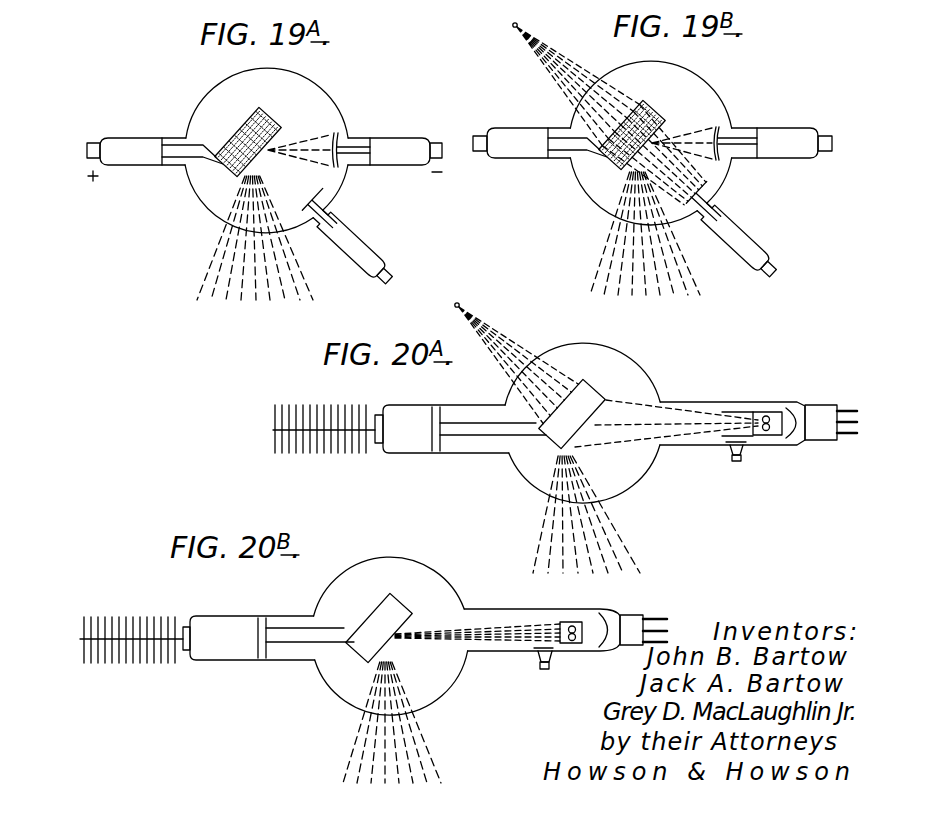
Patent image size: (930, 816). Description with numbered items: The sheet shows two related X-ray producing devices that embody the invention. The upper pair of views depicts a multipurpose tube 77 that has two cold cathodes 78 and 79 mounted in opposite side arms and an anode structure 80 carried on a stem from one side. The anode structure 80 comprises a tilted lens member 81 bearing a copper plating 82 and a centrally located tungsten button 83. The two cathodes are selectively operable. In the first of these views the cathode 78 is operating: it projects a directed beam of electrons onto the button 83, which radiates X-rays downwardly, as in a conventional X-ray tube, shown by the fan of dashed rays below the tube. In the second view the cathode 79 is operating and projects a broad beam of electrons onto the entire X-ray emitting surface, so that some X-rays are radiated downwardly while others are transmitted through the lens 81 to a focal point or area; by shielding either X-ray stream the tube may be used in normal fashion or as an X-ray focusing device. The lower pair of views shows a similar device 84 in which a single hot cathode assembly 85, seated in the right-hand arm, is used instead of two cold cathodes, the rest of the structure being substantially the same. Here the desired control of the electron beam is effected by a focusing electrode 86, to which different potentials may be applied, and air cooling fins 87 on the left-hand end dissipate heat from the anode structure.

In FIG. 19A, the tube 77 is at (217, 97).
In FIG. 19B, the tube 77 is at (748, 76).
In FIG. 19A, the cold cathode 78 is at (338, 132).
In FIG. 19B, the cold cathode 78 is at (722, 127).
In FIG. 19A, the cold cathode 79 is at (330, 200).
In FIG. 19B, the cold cathode 79 is at (712, 195).
In FIG. 19A, the anode structure 80 is at (207, 161).
In FIG. 19B, the anode structure 80 is at (588, 160).
In FIG. 19A, the lens member 81 is at (266, 113).
In FIG. 19B, the lens member 81 is at (652, 107).
In FIG. 20A, the lens member 81 is at (587, 379).
In FIG. 20B, the lens member 81 is at (389, 592).
In FIG. 19A, the copper plating 82 is at (292, 132).
In FIG. 19B, the copper plating 82 is at (683, 127).
In FIG. 19A, the tungsten button 83 is at (243, 132).
In FIG. 19B, the tungsten button 83 is at (590, 106).
In FIG. 20A, the device 84 is at (637, 363).
In FIG. 20B, the device 84 is at (433, 573).
In FIG. 20A, the hot cathode assembly 85 is at (765, 440).
In FIG. 20B, the hot cathode assembly 85 is at (574, 652).
In FIG. 20A, the focusing electrode 86 is at (729, 446).
In FIG. 20B, the focusing electrode 86 is at (538, 657).
In FIG. 20A, the air cooling fins 87 is at (312, 403).
In FIG. 20B, the air cooling fins 87 is at (130, 617).